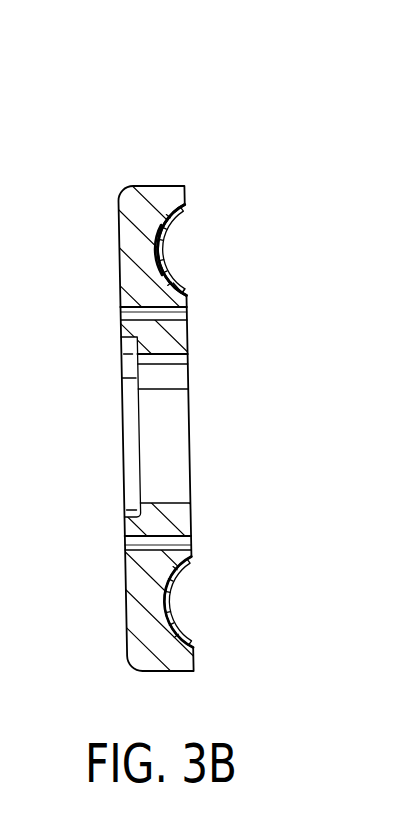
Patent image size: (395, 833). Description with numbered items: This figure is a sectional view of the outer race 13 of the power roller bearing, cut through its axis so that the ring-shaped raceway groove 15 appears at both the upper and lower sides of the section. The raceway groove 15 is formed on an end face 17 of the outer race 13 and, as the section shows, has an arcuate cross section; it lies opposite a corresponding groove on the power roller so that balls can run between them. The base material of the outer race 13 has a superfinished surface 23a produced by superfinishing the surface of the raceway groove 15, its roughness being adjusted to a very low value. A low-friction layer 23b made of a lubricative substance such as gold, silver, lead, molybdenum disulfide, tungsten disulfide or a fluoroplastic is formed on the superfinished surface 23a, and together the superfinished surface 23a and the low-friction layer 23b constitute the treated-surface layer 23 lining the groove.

The outer race 13 is at (152, 171).
The raceway groove 15 is at (170, 243).
The end face 17 is at (186, 330).
The treated-surface layer 23 is at (170, 264).
The superfinished surface 23a is at (158, 258).
The low-friction layer 23b is at (182, 285).